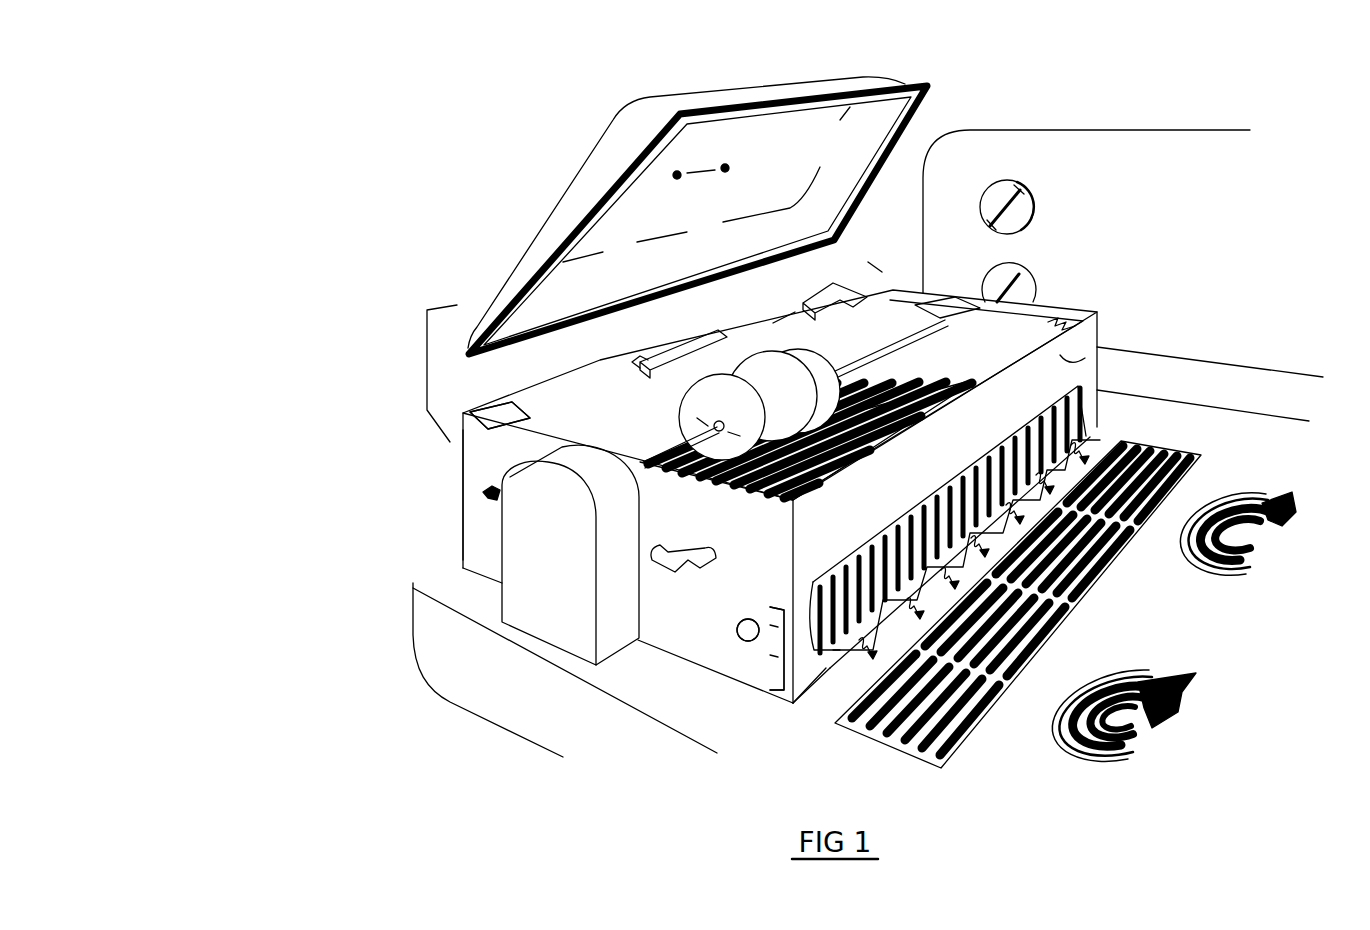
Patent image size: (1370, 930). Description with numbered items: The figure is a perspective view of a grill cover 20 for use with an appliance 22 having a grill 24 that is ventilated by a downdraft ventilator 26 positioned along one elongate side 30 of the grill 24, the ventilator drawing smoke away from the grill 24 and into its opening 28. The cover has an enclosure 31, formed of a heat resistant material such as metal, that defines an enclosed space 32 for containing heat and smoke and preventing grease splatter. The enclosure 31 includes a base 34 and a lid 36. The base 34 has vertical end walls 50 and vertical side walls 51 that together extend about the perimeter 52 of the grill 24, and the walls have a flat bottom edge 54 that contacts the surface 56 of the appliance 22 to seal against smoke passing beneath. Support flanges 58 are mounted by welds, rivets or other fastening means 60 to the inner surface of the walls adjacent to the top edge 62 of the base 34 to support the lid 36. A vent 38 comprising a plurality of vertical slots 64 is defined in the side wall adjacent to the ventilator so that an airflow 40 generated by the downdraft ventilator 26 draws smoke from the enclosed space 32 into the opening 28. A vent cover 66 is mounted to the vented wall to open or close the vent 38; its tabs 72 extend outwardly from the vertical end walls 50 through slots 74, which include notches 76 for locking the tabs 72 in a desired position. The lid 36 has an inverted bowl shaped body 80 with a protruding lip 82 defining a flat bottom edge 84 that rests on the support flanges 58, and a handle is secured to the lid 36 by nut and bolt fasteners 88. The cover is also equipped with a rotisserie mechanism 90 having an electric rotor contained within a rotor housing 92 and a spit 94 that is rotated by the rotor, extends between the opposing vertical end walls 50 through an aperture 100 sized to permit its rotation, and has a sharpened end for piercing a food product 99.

The grill cover 20 is at (348, 385).
The appliance 22 is at (1052, 135).
The grill 24 is at (883, 390).
The downdraft ventilator 26 is at (1094, 586).
The opening 28 is at (1159, 457).
The elongate side 30 is at (817, 698).
The enclosure 31 is at (427, 357).
The enclosed space 32 is at (877, 265).
The base 34 is at (678, 637).
The lid 36 is at (562, 195).
The vent 38 is at (968, 463).
The airflow 40 is at (906, 597).
The vertical end walls 50 is at (1050, 316).
The vertical side walls 51 is at (773, 323).
The perimeter 52 is at (1037, 282).
The flat bottom edge 54 is at (1087, 448).
The surface 56 is at (853, 640).
The support flanges 58 is at (826, 288).
The fastening means 60 is at (646, 363).
The top edge 62 is at (490, 403).
The vertical slots 64 is at (812, 600).
The vent cover 66 is at (745, 650).
The tabs 72 is at (744, 600).
The slots 74 is at (768, 690).
The notches 76 is at (770, 698).
The inverted bowl shaped body 80 is at (612, 122).
The protruding lip 82 is at (936, 86).
The flat bottom edge 84 is at (928, 100).
The nut and bolt fasteners 88 is at (703, 170).
The rotisserie mechanism 90 is at (518, 652).
The rotor housing 92 is at (563, 555).
The spit 94 is at (462, 430).
The food product 99 is at (707, 387).
The aperture 100 is at (963, 318).